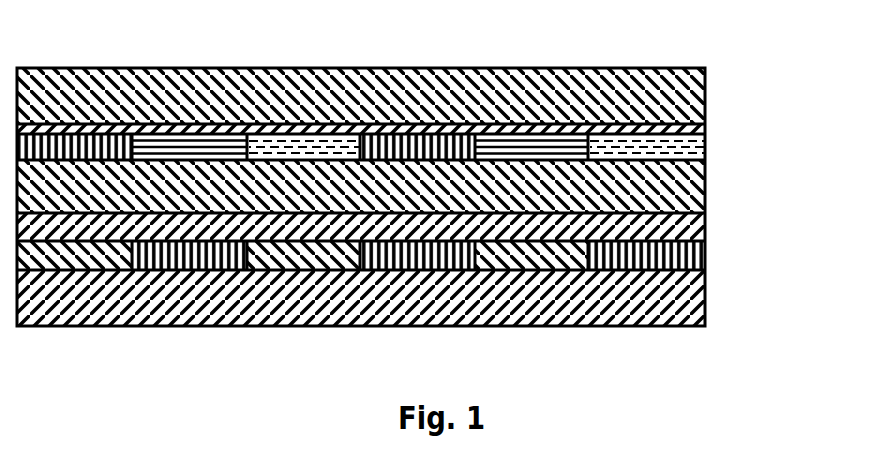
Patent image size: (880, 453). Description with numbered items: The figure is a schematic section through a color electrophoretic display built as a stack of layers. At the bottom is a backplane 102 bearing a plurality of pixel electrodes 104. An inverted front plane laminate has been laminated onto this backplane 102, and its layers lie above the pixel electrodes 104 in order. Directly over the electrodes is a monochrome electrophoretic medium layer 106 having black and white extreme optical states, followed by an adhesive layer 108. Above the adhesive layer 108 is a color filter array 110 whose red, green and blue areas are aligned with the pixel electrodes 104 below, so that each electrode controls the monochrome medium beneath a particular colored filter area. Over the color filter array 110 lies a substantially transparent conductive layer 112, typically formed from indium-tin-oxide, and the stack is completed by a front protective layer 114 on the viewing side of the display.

The backplane 102 is at (690, 315).
The pixel electrodes 104 is at (683, 262).
The monochrome electrophoretic medium layer 106 is at (670, 228).
The adhesive layer 108 is at (660, 193).
The color filter array 110 is at (652, 150).
The substantially transparent conductive layer 112 is at (641, 127).
The front protective layer 114 is at (325, 100).